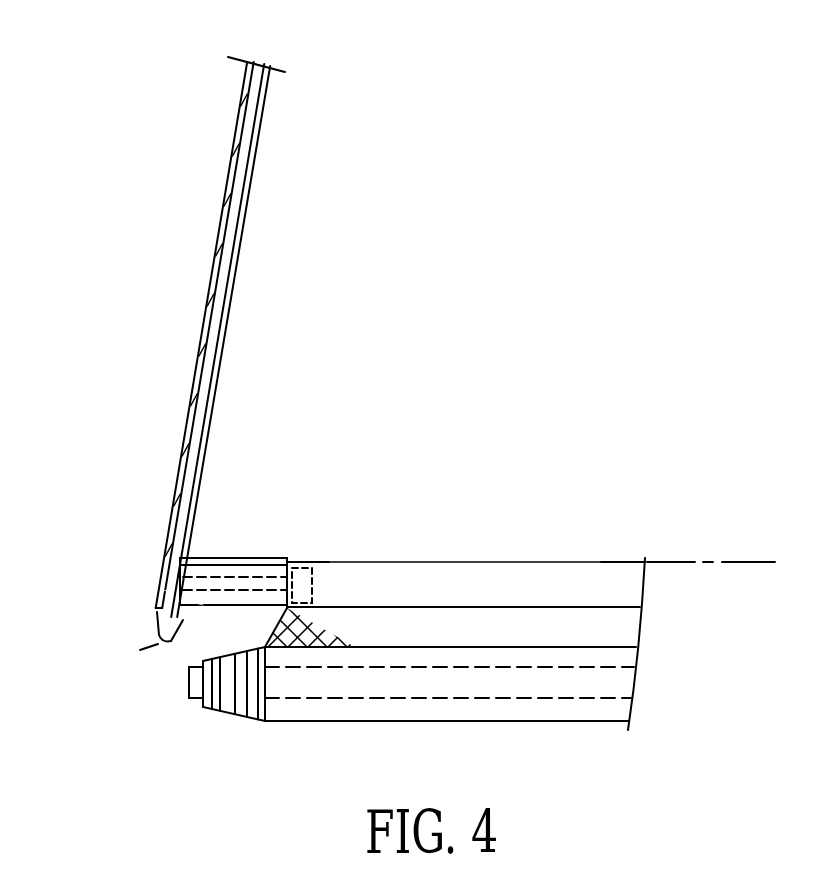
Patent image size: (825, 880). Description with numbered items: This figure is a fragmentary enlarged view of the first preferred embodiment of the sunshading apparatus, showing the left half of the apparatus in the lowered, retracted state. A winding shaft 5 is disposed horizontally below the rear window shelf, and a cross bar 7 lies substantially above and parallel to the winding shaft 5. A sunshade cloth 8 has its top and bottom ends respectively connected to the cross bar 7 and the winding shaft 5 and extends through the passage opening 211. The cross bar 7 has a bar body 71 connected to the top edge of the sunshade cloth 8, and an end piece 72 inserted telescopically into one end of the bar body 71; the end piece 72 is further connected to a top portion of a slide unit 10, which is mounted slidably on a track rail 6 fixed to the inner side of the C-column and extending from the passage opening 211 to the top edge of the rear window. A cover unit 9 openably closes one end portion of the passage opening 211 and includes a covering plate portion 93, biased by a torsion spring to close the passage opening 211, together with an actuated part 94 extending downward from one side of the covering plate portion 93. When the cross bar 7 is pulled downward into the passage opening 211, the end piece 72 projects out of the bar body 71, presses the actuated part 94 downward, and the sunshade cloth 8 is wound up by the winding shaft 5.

The winding shaft 5 is at (535, 690).
The track rail 6 is at (215, 263).
The cross bar 7 is at (520, 556).
The sunshade cloth 8 is at (628, 625).
The cover unit 9 is at (236, 548).
The slide unit 10 is at (170, 592).
The bar body 71 is at (410, 590).
The end piece 72 is at (262, 582).
The covering plate portion 93 is at (212, 558).
The actuated part 94 is at (203, 600).
The passage opening 211 is at (744, 563).